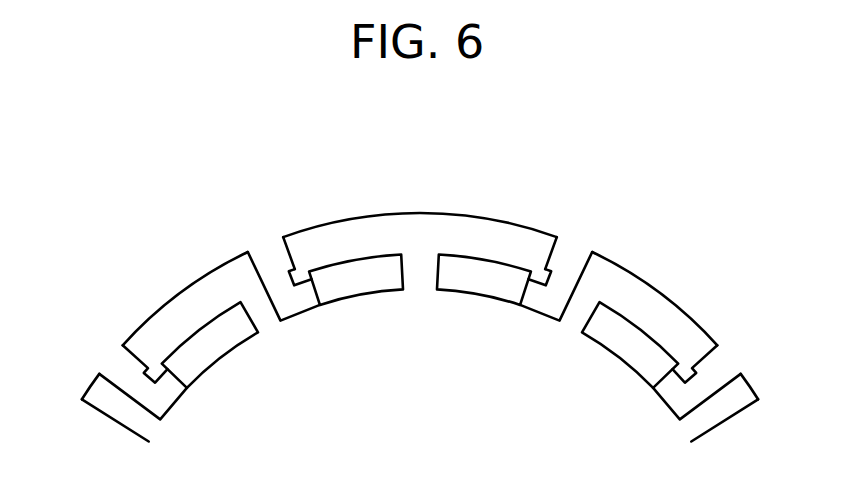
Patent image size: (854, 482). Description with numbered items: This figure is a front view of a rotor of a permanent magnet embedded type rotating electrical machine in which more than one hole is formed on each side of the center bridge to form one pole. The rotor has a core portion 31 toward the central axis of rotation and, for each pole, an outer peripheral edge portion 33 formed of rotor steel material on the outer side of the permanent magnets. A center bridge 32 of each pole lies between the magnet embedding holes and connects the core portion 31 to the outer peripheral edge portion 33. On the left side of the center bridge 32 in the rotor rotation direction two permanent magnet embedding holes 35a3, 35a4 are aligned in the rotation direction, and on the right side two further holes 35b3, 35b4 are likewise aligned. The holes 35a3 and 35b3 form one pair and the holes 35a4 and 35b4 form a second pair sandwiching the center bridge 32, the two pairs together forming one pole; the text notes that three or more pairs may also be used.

The core portion 31 is at (411, 383).
The center bridge 32 is at (417, 272).
The outer peripheral edge portion 33 is at (349, 240).
The permanent magnet embedding hole 35a3 is at (308, 298).
The permanent magnet embedding hole 35b3 is at (528, 296).
The permanent magnet embedding hole 35a4 is at (177, 380).
The permanent magnet embedding hole 35b4 is at (664, 383).